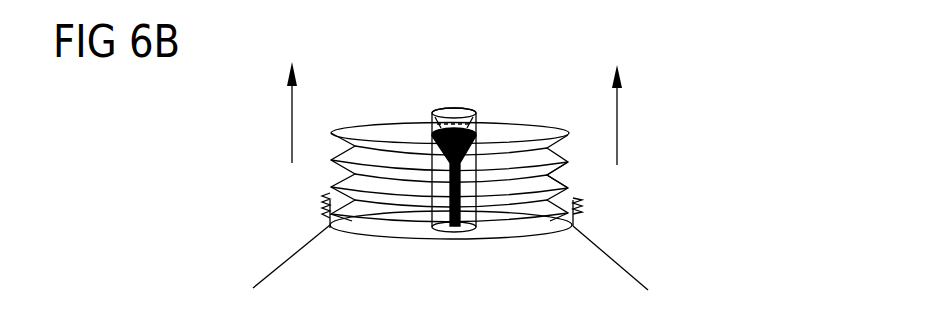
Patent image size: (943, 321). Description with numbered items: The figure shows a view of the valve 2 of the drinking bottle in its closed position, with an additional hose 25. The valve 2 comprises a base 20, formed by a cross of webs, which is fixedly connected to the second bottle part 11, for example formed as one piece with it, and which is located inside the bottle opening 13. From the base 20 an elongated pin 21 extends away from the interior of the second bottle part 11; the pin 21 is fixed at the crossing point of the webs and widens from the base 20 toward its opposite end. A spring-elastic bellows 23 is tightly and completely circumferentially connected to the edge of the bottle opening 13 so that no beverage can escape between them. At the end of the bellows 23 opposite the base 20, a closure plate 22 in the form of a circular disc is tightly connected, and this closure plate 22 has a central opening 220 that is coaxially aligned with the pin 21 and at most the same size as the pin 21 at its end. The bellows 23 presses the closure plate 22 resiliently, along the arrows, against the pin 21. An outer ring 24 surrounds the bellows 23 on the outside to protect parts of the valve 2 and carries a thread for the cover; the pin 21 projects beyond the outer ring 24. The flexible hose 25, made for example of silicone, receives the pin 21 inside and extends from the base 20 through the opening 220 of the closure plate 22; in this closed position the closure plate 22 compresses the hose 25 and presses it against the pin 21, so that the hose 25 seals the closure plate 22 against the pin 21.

The valve 2 is at (705, 134).
The second bottle part 11 is at (640, 280).
The bottle opening 13 is at (293, 250).
The base 20 is at (460, 230).
The pin 21 is at (465, 112).
The closure plate 22 is at (508, 132).
The bellows 23 is at (567, 163).
The outer ring 24 is at (577, 220).
The hose 25 is at (477, 116).
The opening 220 is at (433, 112).